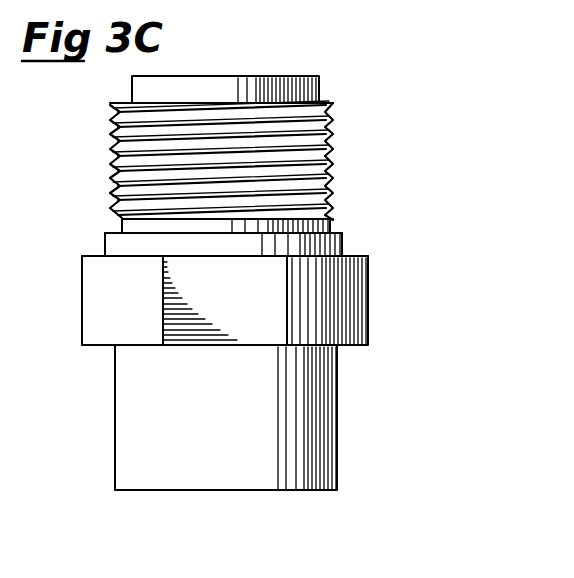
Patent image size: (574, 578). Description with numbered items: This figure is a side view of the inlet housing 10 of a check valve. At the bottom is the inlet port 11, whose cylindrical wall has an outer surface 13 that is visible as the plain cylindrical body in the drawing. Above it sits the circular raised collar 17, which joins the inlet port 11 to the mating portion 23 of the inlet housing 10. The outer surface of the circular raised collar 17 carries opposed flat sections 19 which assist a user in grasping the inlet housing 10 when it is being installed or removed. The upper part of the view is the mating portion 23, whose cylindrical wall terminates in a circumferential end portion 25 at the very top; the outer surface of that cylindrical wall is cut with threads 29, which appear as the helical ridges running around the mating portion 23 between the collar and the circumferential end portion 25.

The inlet housing 10 is at (99, 152).
The inlet port 11 is at (114, 398).
The outer surface 13 is at (338, 436).
The circular raised collar 17 is at (358, 302).
The opposed flat sections 19 is at (268, 333).
The mating portion 23 is at (130, 185).
The circumferential end portion 25 is at (318, 96).
The threads 29 is at (334, 143).